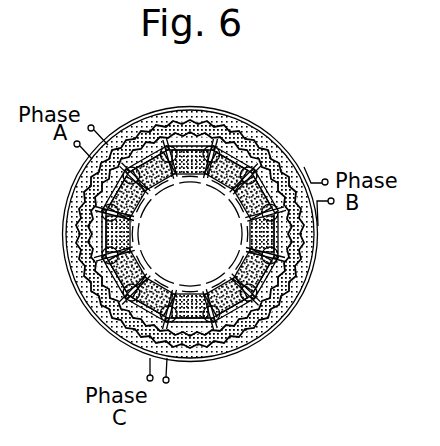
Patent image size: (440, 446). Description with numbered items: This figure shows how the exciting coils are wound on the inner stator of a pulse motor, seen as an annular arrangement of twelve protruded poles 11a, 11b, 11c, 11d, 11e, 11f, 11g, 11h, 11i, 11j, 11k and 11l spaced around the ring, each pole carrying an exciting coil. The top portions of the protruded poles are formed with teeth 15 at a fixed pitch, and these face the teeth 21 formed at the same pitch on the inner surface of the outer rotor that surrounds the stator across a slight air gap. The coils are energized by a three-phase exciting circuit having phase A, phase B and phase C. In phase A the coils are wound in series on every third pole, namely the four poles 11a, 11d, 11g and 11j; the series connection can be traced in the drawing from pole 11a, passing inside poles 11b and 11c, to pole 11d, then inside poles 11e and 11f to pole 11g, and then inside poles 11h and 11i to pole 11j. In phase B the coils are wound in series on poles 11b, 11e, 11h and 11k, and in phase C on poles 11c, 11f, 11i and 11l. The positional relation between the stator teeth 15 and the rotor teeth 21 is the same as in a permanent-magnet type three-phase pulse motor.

The protruded pole 11a is at (212, 122).
The protruded pole 11b is at (263, 150).
The protruded pole 11c is at (293, 172).
The protruded pole 11d is at (302, 240).
The protruded pole 11e is at (285, 292).
The protruded pole 11f is at (230, 352).
The protruded pole 11g is at (193, 342).
The protruded pole 11h is at (113, 330).
The protruded pole 11i is at (86, 287).
The protruded pole 11j is at (92, 235).
The protruded pole 11k is at (86, 181).
The protruded pole 11l is at (136, 127).
The teeth 15 is at (283, 299).
The teeth 21 is at (261, 323).